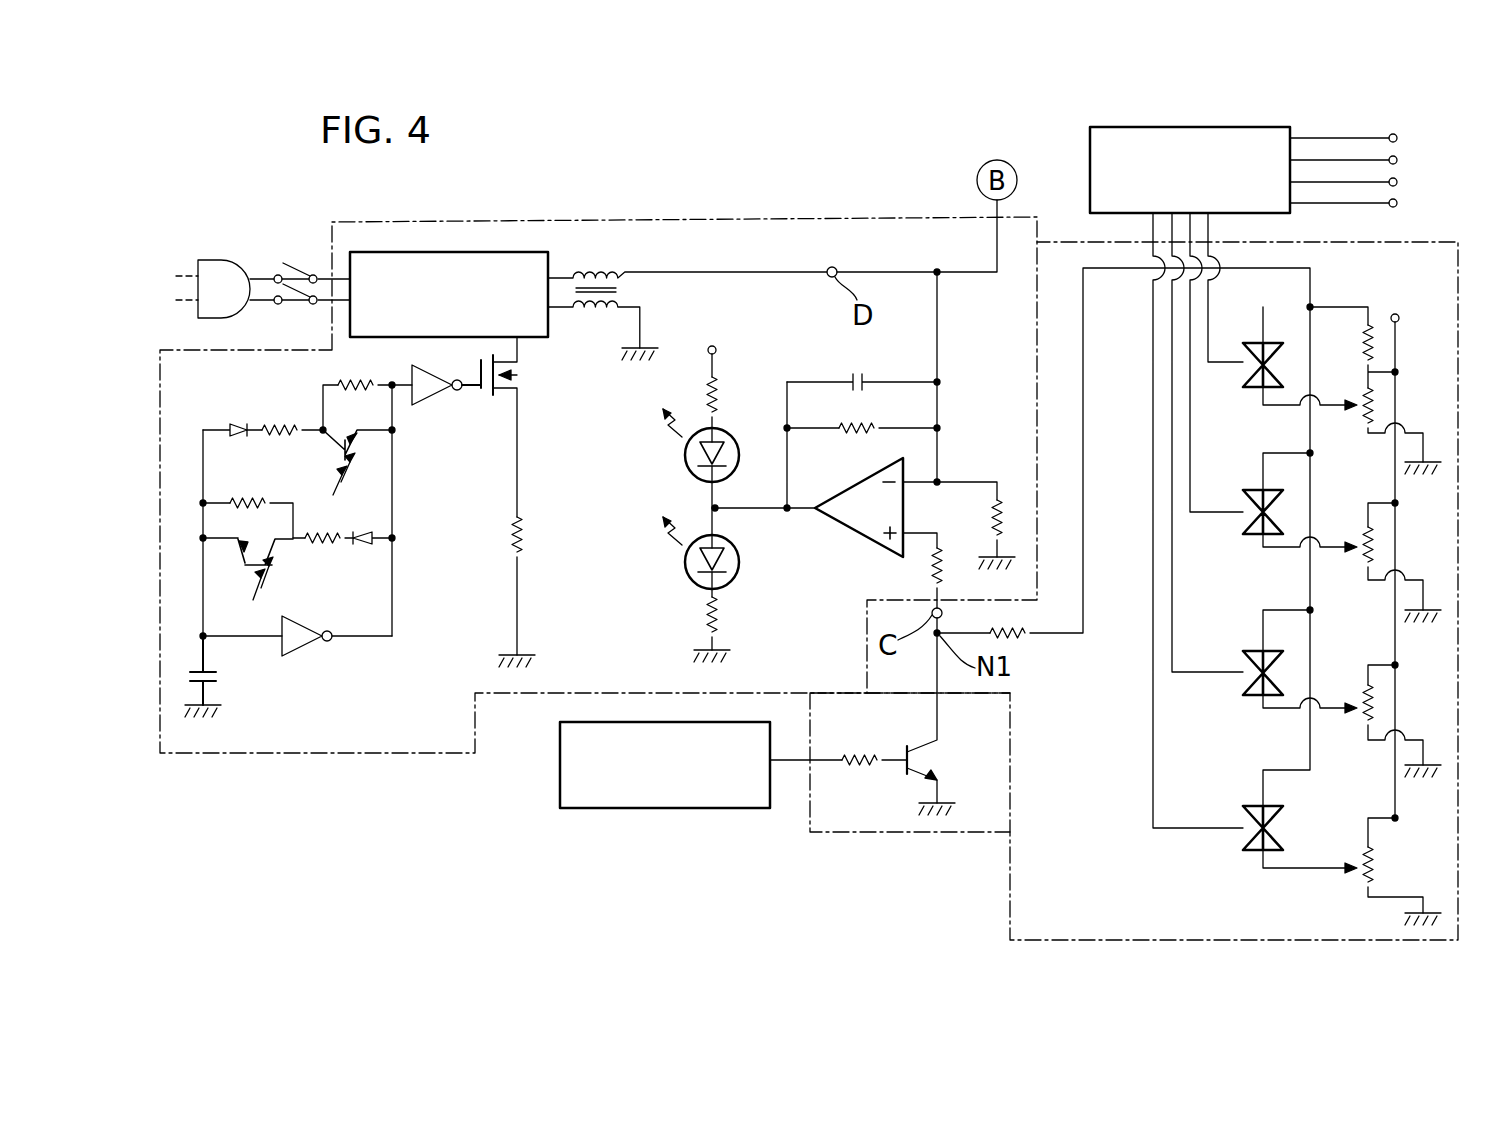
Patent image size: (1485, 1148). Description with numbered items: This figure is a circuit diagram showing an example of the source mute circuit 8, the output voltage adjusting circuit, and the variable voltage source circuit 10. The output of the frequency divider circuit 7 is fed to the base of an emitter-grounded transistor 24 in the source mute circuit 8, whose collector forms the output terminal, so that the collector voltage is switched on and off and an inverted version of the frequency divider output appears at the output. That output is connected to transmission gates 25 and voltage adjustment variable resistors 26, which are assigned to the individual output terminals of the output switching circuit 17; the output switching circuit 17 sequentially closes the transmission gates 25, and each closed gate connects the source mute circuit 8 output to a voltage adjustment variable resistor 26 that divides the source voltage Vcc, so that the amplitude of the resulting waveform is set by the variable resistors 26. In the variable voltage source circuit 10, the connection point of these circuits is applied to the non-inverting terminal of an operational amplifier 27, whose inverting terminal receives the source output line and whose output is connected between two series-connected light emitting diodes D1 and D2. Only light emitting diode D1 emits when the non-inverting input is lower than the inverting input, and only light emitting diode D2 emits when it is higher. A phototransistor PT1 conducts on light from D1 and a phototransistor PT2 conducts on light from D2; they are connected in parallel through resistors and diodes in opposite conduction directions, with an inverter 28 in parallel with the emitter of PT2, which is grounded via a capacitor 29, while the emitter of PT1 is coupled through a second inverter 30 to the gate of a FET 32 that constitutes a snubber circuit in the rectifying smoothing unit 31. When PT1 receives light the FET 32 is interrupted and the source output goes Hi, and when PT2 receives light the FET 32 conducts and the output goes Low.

The frequency divider circuit 7 is at (673, 808).
The source mute circuit 8 is at (900, 832).
The variable voltage source circuit 10 is at (402, 755).
The output switching circuit 17 is at (1090, 156).
The transistor 24 is at (907, 753).
The transmission gate 25 is at (1250, 393).
The voltage adjustment variable resistor 26 is at (1365, 415).
The operational amplifier 27 is at (860, 538).
The inverter 28 is at (307, 650).
The capacitor 29 is at (222, 674).
The inverter 30 is at (435, 398).
The rectifying smoothing unit 31 is at (480, 252).
The FET 32 is at (517, 375).
The phototransistor PT1 is at (330, 465).
The phototransistor PT2 is at (277, 560).
The light emitting diode D1 is at (738, 433).
The light emitting diode D2 is at (742, 569).